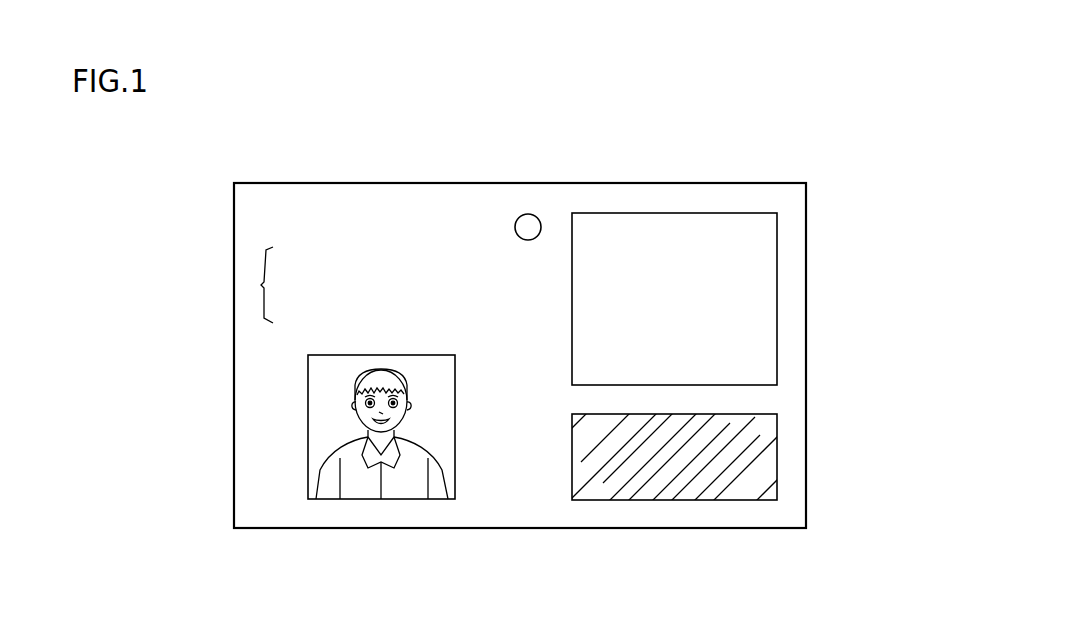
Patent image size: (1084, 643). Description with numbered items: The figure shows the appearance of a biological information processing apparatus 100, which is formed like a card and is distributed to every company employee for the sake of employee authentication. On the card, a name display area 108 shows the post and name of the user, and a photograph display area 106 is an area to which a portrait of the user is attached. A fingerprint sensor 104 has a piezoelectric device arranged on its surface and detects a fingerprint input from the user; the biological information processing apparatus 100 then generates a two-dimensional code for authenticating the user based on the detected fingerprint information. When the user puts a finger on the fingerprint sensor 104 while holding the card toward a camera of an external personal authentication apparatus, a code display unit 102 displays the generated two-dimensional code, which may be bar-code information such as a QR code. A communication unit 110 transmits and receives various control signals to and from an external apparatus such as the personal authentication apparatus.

The biological information processing apparatus 100 is at (540, 607).
The code display unit 102 is at (777, 299).
The fingerprint sensor 104 is at (777, 459).
The photograph display area 106 is at (308, 427).
The name display area 108 is at (263, 285).
The communication unit 110 is at (537, 214).